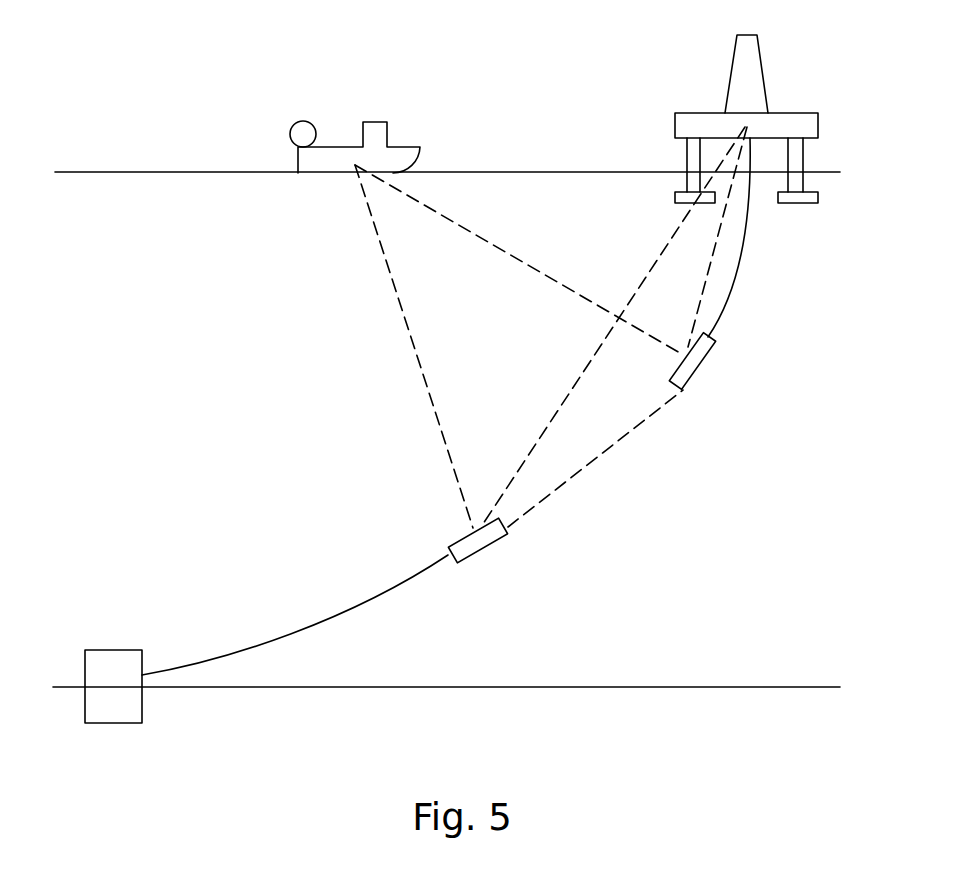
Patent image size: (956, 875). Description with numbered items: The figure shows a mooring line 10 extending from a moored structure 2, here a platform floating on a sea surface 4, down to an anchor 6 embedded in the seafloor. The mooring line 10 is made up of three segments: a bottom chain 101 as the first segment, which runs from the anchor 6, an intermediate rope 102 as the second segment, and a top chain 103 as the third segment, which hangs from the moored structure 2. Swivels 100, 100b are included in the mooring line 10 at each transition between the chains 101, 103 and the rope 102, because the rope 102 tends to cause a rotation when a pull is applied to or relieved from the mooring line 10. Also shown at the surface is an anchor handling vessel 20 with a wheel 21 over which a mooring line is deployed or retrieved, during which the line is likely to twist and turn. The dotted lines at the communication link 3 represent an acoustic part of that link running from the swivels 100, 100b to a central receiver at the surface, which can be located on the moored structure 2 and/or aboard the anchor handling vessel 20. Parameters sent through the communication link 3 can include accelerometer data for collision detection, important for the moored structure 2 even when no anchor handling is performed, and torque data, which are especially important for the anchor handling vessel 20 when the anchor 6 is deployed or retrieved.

The moored structure 2 is at (802, 122).
The communication link 3 is at (548, 277).
The sea surface 4 is at (100, 172).
The anchor 6 is at (112, 650).
The mooring line 10 is at (305, 333).
The anchor handling vessel 20 is at (405, 153).
The wheel 21 is at (310, 124).
The swivel 100 is at (693, 360).
The swivel 100b is at (478, 538).
The bottom chain 101 is at (322, 622).
The intermediate rope 102 is at (592, 467).
The top chain 103 is at (740, 268).